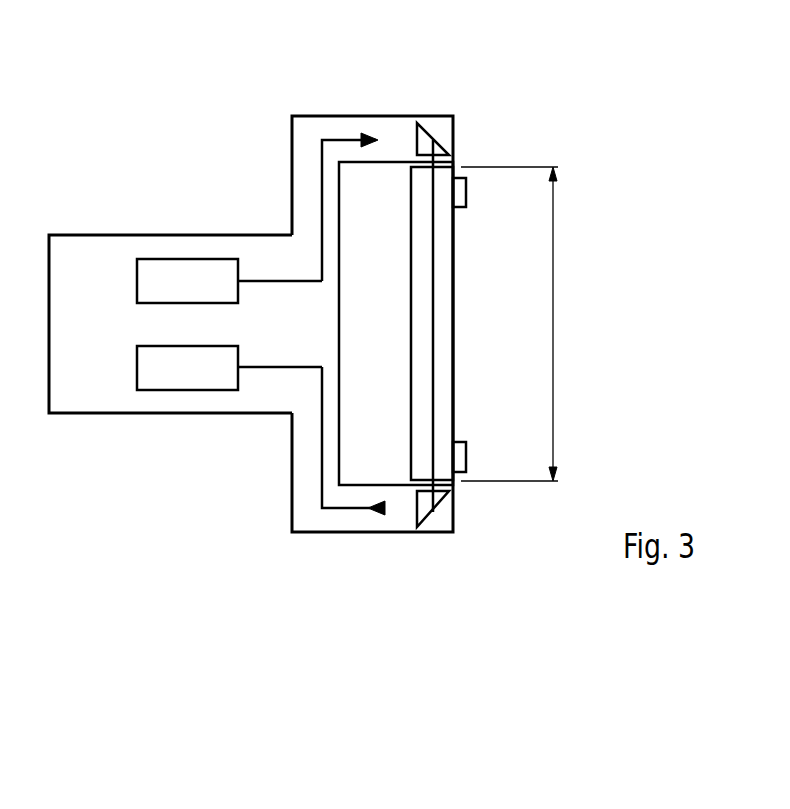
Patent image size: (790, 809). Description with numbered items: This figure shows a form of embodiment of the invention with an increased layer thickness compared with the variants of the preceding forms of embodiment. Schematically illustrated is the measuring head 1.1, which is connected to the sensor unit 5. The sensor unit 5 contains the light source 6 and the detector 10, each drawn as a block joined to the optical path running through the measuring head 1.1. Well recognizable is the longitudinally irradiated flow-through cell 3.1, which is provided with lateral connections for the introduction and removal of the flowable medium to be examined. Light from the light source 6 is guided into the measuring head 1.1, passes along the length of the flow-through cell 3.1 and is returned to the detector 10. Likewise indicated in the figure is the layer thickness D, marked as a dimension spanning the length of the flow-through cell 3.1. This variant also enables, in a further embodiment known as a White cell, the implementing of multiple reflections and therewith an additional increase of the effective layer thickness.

The measuring head 1.1 is at (372, 116).
The sensor unit 5 is at (99, 330).
The detector 10 is at (200, 292).
The light source 6 is at (196, 378).
The flow-through cell 3.1 is at (455, 323).
The layer thickness D is at (555, 323).